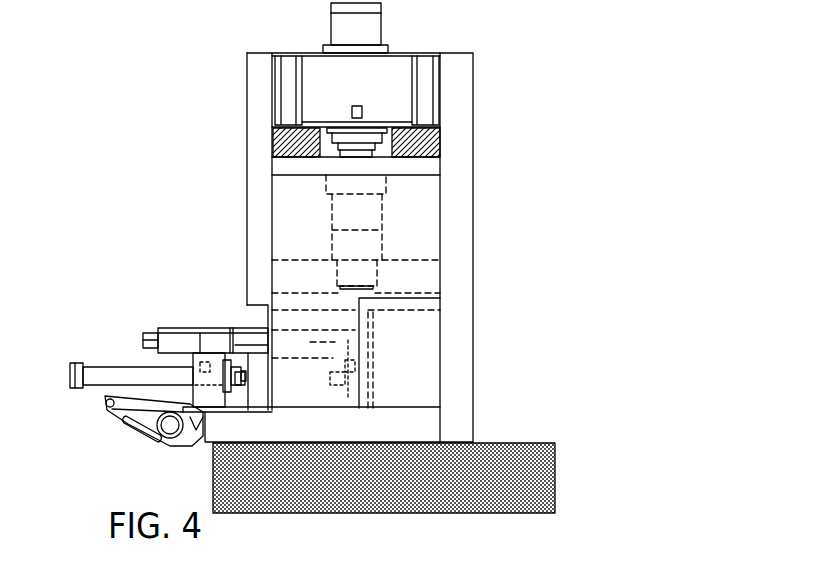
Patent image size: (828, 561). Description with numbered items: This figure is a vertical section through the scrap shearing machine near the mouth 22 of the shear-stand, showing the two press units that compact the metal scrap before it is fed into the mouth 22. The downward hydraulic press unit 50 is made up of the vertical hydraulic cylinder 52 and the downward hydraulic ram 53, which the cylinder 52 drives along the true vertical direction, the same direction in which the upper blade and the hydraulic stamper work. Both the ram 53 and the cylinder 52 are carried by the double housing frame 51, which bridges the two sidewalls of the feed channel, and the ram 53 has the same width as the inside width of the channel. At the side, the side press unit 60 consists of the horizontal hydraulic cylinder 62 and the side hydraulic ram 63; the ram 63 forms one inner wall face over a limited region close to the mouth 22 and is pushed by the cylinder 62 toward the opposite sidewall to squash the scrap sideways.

The mouth 22 is at (415, 351).
The downward hydraulic press unit 50 is at (468, 180).
The double housing frame 51 is at (468, 232).
The vertical hydraulic cylinder 52 is at (372, 24).
The downward hydraulic ram 53 is at (440, 133).
The side press unit 60 is at (215, 328).
The horizontal hydraulic cylinder 62 is at (152, 370).
The side hydraulic ram 63 is at (262, 360).